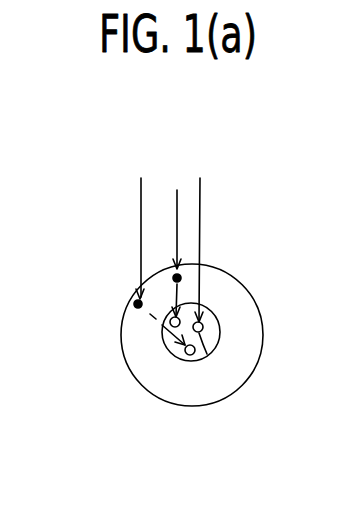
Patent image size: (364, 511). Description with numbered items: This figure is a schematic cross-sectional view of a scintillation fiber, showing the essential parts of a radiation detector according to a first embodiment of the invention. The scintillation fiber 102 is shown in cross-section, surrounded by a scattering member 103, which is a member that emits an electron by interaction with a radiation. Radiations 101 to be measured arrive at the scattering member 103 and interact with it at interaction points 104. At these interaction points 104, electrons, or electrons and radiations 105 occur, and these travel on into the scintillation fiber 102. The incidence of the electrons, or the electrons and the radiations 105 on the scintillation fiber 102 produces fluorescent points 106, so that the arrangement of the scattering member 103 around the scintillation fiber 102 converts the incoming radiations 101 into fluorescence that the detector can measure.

The radiations 101 is at (199, 193).
The scintillation fiber 102 is at (217, 344).
The scattering member 103 is at (242, 282).
The interaction points 104 is at (174, 280).
The electrons, or electrons and radiations 105 is at (168, 315).
The fluorescent points 106 is at (186, 338).